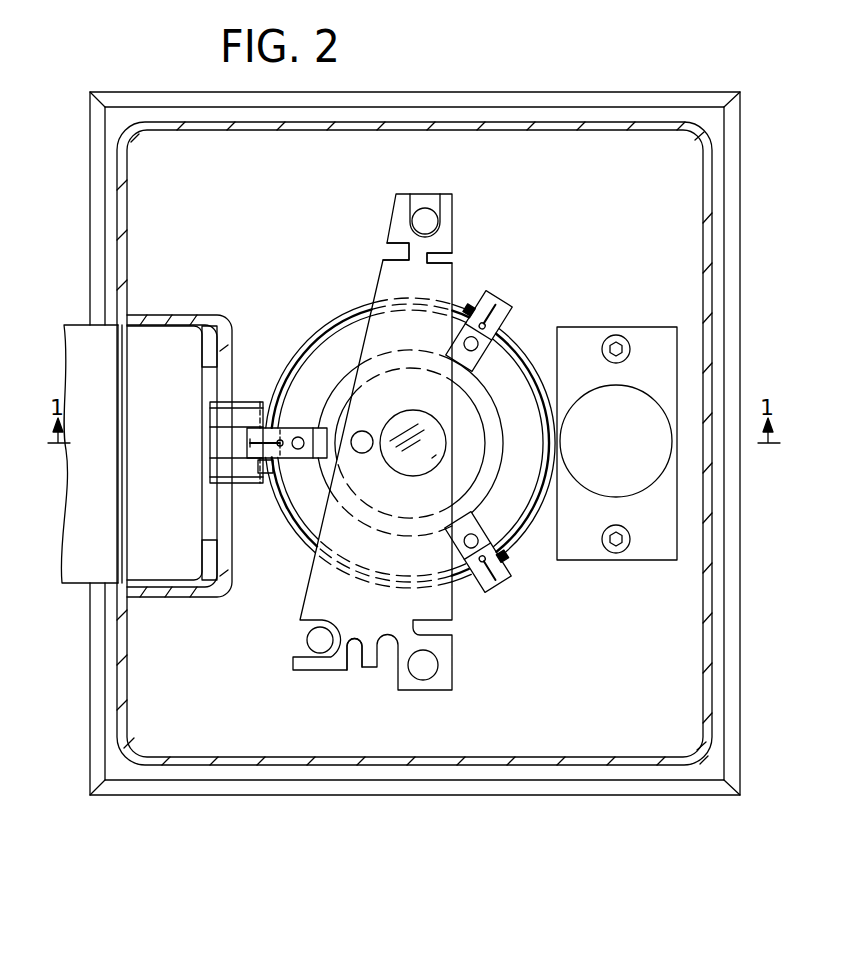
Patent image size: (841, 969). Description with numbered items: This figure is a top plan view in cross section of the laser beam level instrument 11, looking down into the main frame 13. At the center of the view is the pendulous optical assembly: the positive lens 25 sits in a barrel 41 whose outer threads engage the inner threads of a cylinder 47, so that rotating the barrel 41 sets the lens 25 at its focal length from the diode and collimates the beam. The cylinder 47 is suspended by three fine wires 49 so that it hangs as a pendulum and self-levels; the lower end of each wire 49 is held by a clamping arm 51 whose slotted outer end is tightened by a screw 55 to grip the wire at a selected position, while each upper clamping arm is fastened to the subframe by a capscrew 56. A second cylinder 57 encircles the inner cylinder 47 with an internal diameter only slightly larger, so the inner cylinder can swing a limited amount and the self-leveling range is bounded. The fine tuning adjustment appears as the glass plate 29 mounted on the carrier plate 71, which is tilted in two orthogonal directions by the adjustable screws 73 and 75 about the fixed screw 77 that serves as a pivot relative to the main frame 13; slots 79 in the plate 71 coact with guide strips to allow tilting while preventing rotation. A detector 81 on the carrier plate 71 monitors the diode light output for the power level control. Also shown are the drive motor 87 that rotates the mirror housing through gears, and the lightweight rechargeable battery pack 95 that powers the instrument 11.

The laser beam level instrument 11 is at (574, 81).
The main frame 13 is at (198, 130).
The pendulous positive lens 25 is at (462, 467).
The glass plate 29 is at (413, 428).
The barrel or sleeve 41 is at (481, 436).
The cylinder 47 is at (523, 401).
The fine wires 49 is at (250, 443).
The clamping arm 51 is at (288, 457).
The screw 55 is at (272, 505).
The capscrew 56 is at (296, 436).
The second cylinder 57 is at (300, 363).
The carrier plate 71 is at (390, 276).
The adjustable screw 73 is at (423, 217).
The adjustable screw 75 is at (318, 638).
The fixed screw 77 is at (432, 665).
The slots 79 is at (392, 250).
The detector 81 is at (373, 421).
The drive motor 87 is at (630, 456).
The battery pack 95 is at (110, 461).